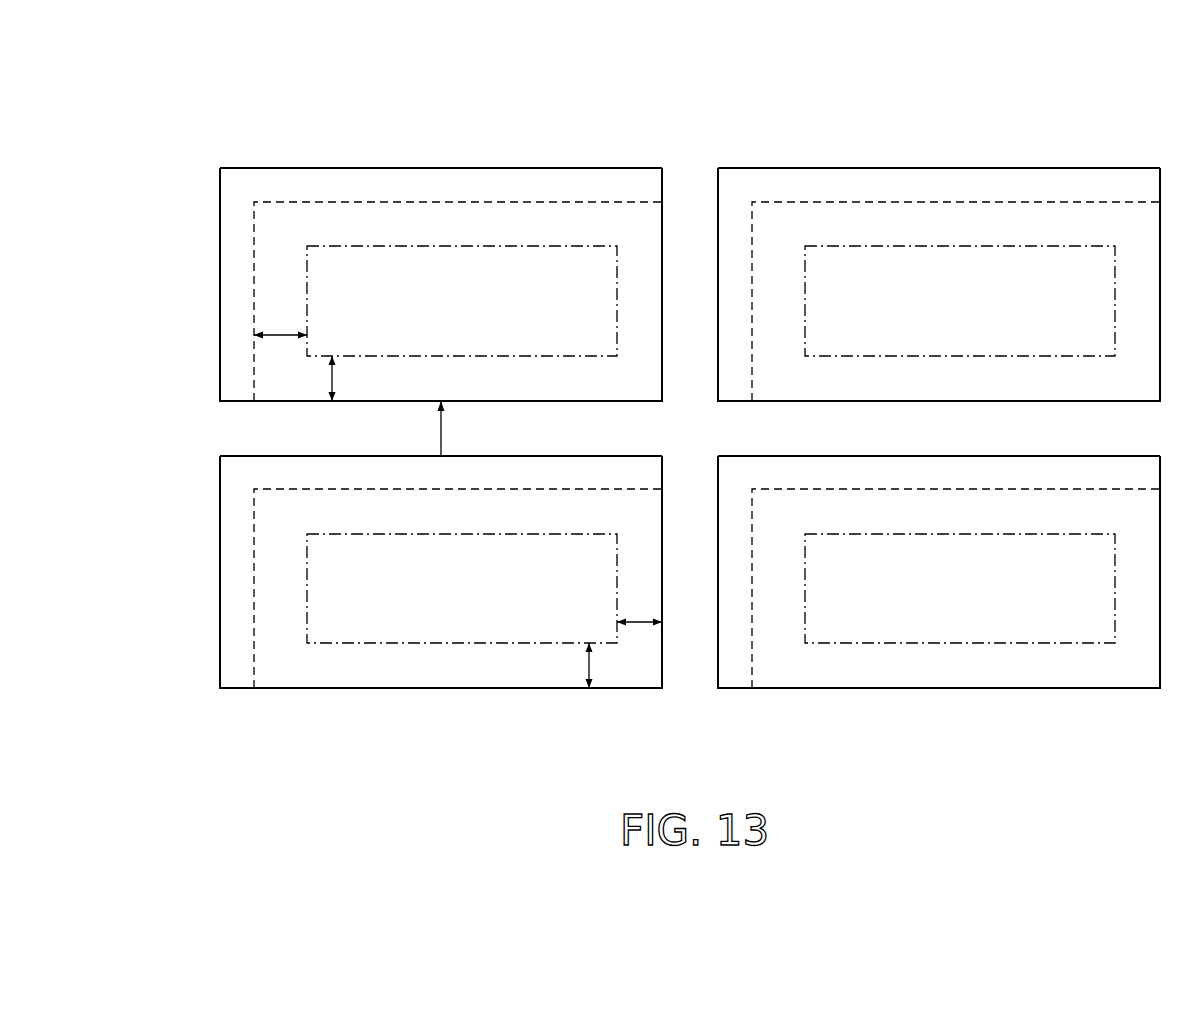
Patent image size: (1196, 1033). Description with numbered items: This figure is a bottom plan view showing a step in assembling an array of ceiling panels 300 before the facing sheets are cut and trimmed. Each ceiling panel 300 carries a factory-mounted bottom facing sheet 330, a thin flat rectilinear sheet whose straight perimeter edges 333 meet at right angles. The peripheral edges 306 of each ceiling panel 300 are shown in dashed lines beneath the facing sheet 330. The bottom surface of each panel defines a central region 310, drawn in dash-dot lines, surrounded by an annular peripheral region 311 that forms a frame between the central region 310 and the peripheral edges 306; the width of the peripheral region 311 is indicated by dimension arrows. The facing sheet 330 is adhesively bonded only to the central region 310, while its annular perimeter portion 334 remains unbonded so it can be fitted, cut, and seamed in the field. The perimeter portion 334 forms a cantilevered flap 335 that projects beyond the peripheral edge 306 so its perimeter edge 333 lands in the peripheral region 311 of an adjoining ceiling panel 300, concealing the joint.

The ceiling panel 300 is at (657, 417).
The peripheral edge 306 is at (418, 202).
The central region 310 is at (479, 313).
The peripheral region 311 is at (332, 378).
The bottom facing sheet 330 is at (690, 424).
The perimeter edge 333 is at (353, 168).
The perimeter portion 334 is at (711, 352).
The flap 335 is at (657, 389).